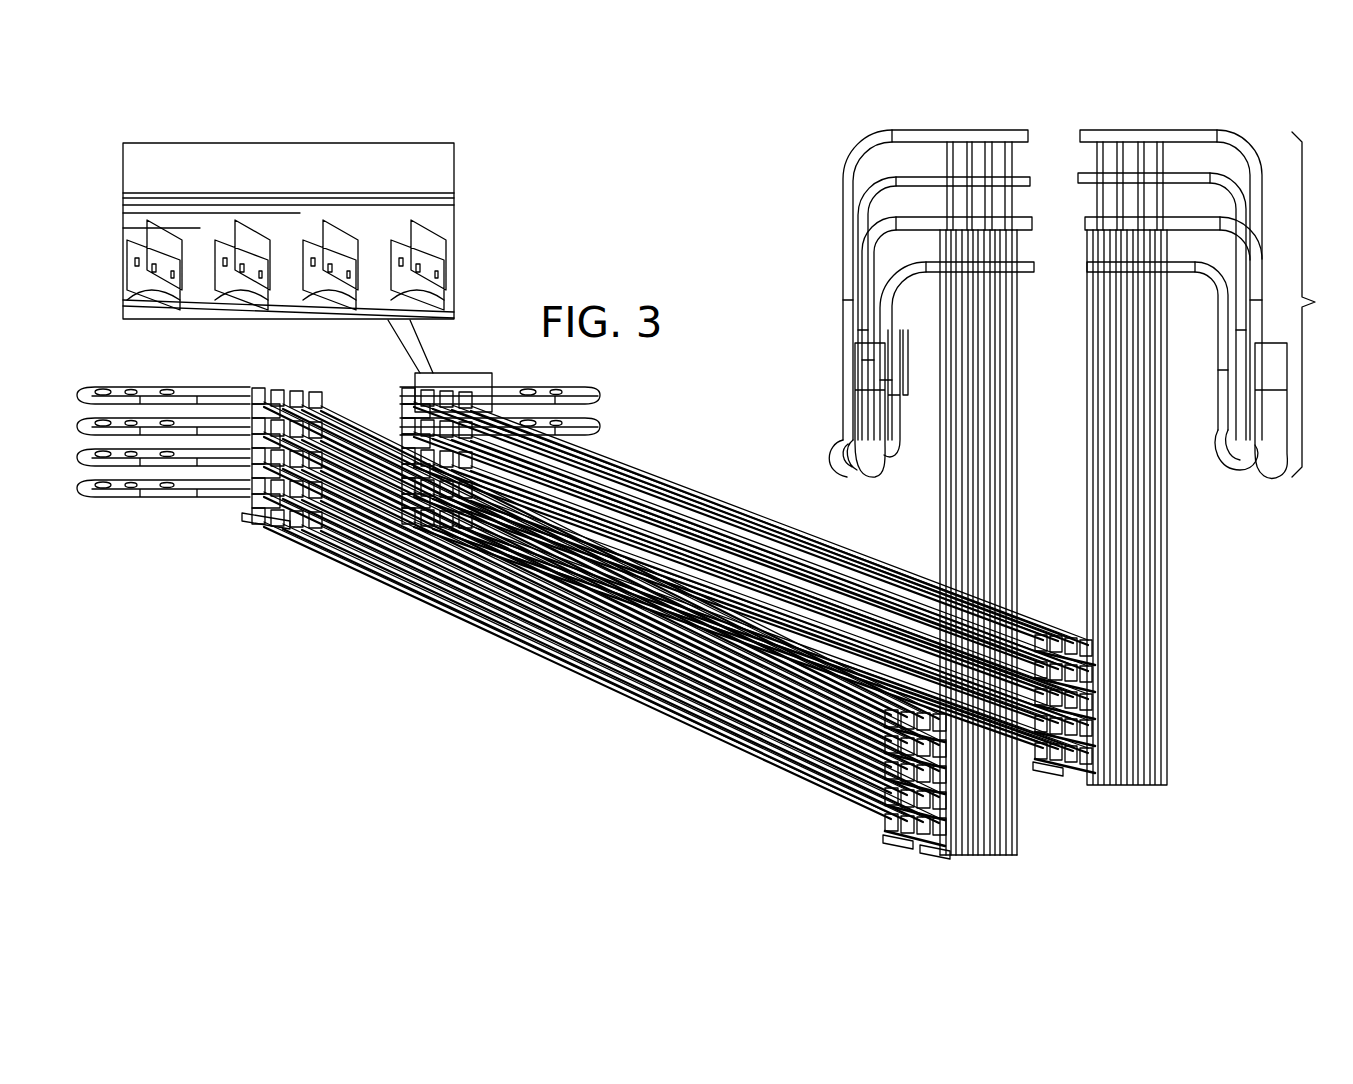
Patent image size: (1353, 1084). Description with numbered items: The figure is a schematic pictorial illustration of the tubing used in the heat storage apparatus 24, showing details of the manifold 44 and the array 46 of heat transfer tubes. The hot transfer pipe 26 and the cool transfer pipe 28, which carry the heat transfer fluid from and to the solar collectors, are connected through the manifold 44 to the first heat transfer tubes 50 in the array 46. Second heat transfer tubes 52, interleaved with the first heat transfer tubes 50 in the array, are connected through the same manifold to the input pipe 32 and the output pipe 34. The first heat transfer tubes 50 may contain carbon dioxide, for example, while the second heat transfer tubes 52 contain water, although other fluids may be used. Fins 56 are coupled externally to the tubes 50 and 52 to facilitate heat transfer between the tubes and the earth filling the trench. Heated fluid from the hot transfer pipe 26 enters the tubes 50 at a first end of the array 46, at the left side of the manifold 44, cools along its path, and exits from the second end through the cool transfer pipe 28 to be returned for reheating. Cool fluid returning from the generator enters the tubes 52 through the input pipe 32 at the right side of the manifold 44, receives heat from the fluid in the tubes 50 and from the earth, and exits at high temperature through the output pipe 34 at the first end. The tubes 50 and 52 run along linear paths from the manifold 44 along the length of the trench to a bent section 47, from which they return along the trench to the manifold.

The heat storage apparatus 24 is at (753, 249).
The hot transfer pipe 26 is at (865, 462).
The cool transfer pipe 28 is at (1265, 455).
The input pipe 32 is at (1240, 348).
The output pipe 34 is at (905, 400).
The manifold 44 is at (1213, 303).
The array 46 is at (850, 848).
The bent section 47 is at (103, 460).
The first heat transfer tubes 50 is at (790, 741).
The second heat transfer tubes 52 is at (947, 847).
The fins 56 is at (373, 237).